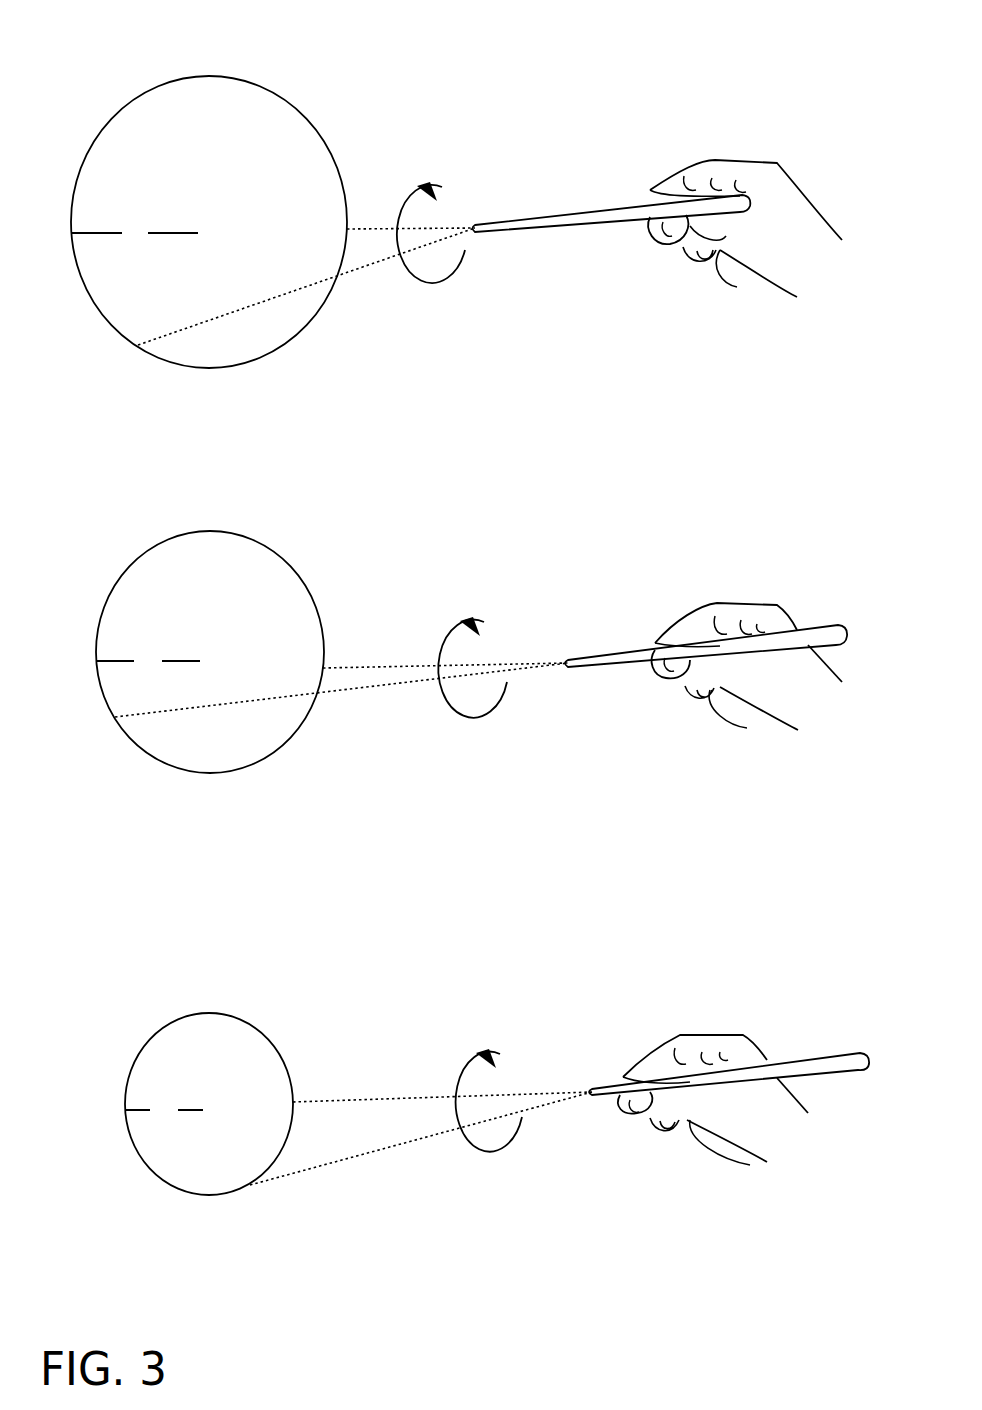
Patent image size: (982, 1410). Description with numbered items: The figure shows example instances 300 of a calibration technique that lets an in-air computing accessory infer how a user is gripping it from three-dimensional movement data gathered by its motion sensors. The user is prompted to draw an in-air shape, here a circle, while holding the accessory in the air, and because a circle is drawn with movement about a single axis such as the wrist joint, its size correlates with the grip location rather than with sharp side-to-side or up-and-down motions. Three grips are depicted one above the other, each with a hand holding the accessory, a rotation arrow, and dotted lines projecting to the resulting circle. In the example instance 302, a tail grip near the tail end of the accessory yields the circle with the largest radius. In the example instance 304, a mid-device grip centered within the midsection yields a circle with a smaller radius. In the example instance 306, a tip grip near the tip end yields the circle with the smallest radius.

The example instances of a calibration technique 300 is at (800, 52).
The example instance 302 is at (645, 365).
The example instance 304 is at (688, 801).
The example instance 306 is at (725, 1238).